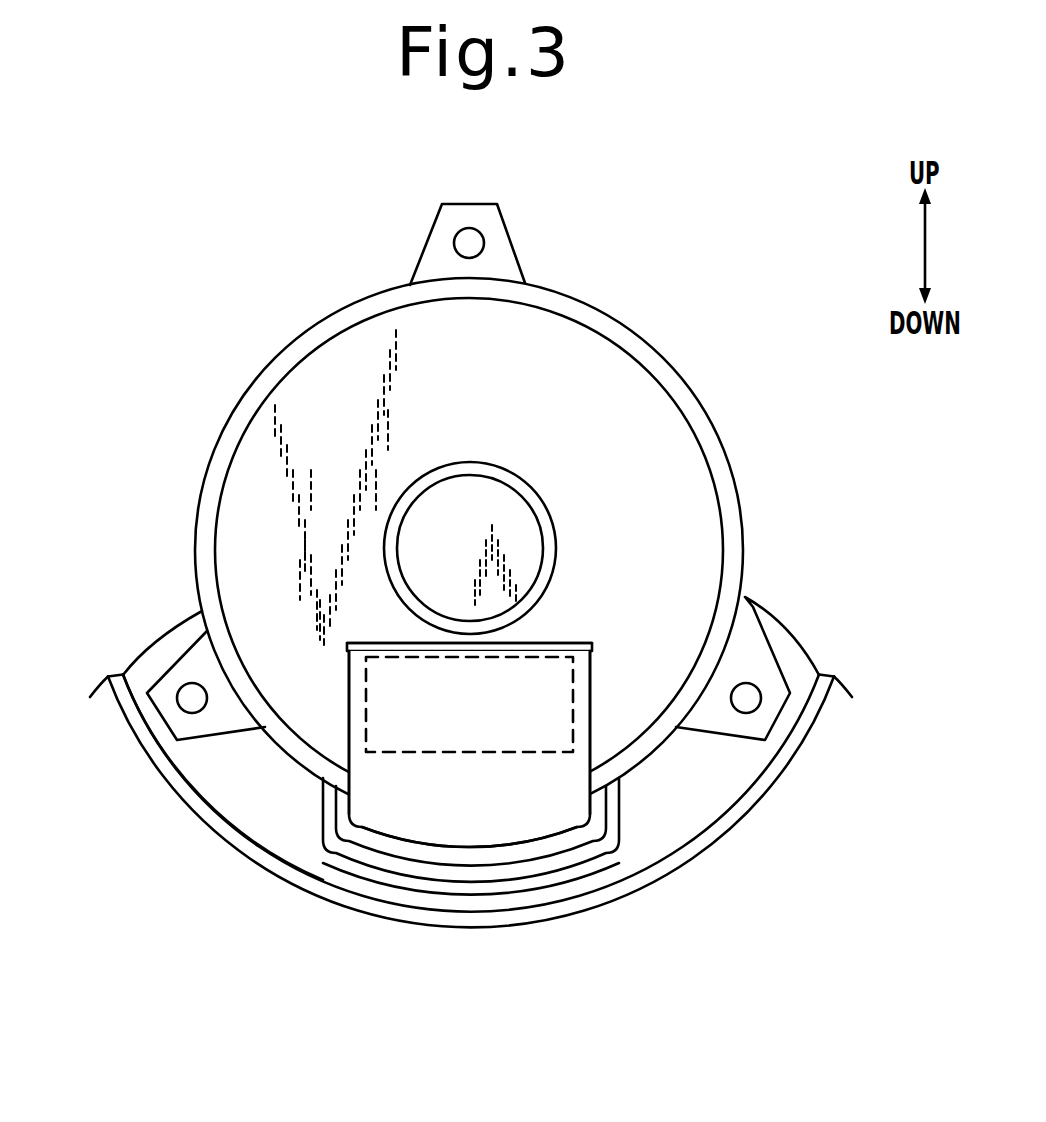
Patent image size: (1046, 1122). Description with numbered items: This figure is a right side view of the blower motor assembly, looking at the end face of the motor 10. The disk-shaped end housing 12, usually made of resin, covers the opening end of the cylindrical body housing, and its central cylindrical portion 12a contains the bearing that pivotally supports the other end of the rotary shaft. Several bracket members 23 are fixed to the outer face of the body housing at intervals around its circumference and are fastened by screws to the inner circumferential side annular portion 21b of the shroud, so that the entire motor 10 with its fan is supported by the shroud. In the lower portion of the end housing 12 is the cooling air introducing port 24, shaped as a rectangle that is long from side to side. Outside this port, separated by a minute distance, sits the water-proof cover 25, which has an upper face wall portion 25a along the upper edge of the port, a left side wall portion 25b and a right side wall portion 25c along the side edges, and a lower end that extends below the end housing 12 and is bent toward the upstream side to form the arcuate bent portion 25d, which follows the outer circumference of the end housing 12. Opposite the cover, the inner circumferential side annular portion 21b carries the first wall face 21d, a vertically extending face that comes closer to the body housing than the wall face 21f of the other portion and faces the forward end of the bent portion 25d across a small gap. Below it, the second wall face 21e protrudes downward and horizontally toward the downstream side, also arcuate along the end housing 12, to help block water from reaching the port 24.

The motor 10 is at (236, 320).
The end housing 12 is at (636, 456).
The central cylindrical portion 12a is at (508, 470).
The bracket member 23 is at (511, 237).
The inner circumferential side annular portion 21b is at (212, 826).
The first wall face 21d is at (575, 856).
The second wall face 21e is at (452, 893).
The wall face of the other portion 21f is at (232, 771).
The cooling air introducing port 24 is at (505, 752).
The water-proof cover 25 is at (501, 747).
The upper face wall portion 25a is at (533, 652).
The left side wall portion 25b is at (349, 703).
The right side wall portion 25c is at (590, 723).
The bent portion 25d is at (484, 858).